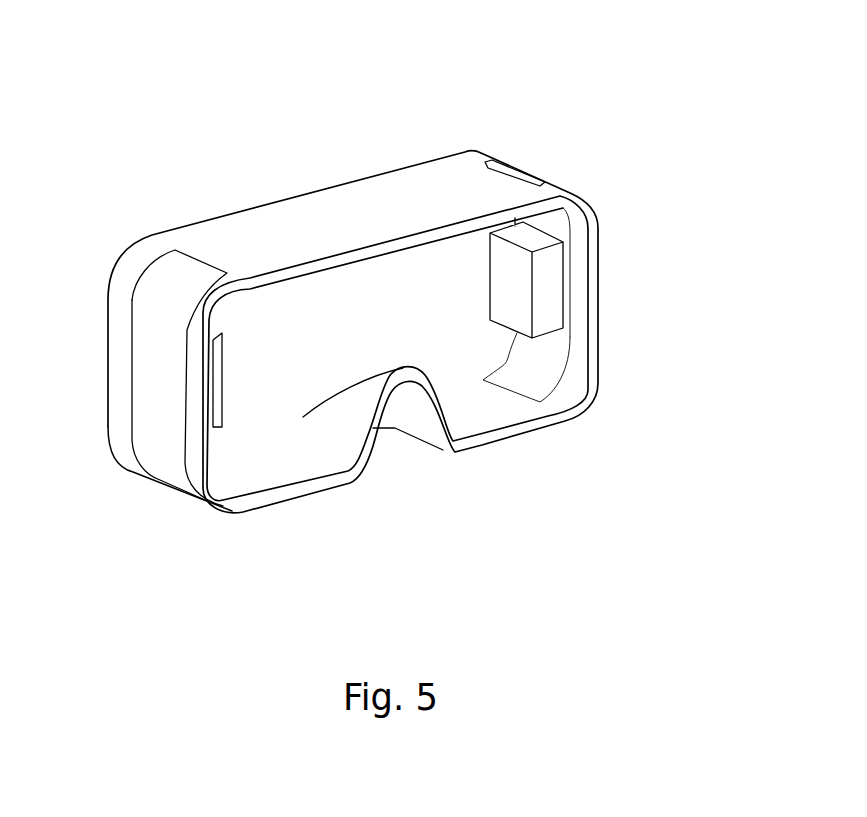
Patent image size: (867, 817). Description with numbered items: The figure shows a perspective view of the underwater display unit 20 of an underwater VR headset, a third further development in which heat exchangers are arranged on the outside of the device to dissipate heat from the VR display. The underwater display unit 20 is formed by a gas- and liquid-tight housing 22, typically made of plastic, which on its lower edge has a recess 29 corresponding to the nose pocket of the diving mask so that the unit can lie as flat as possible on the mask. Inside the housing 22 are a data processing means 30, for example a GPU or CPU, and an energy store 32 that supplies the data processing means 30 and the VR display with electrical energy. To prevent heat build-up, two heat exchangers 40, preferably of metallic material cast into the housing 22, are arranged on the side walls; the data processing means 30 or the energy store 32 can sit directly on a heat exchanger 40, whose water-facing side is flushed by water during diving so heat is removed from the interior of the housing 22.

The underwater display unit 20 is at (188, 130).
The housing 22 is at (348, 190).
The recess 29 is at (395, 428).
The data processing means 30 is at (452, 406).
The energy store 32 is at (543, 310).
The heat exchanger 40 is at (527, 178).